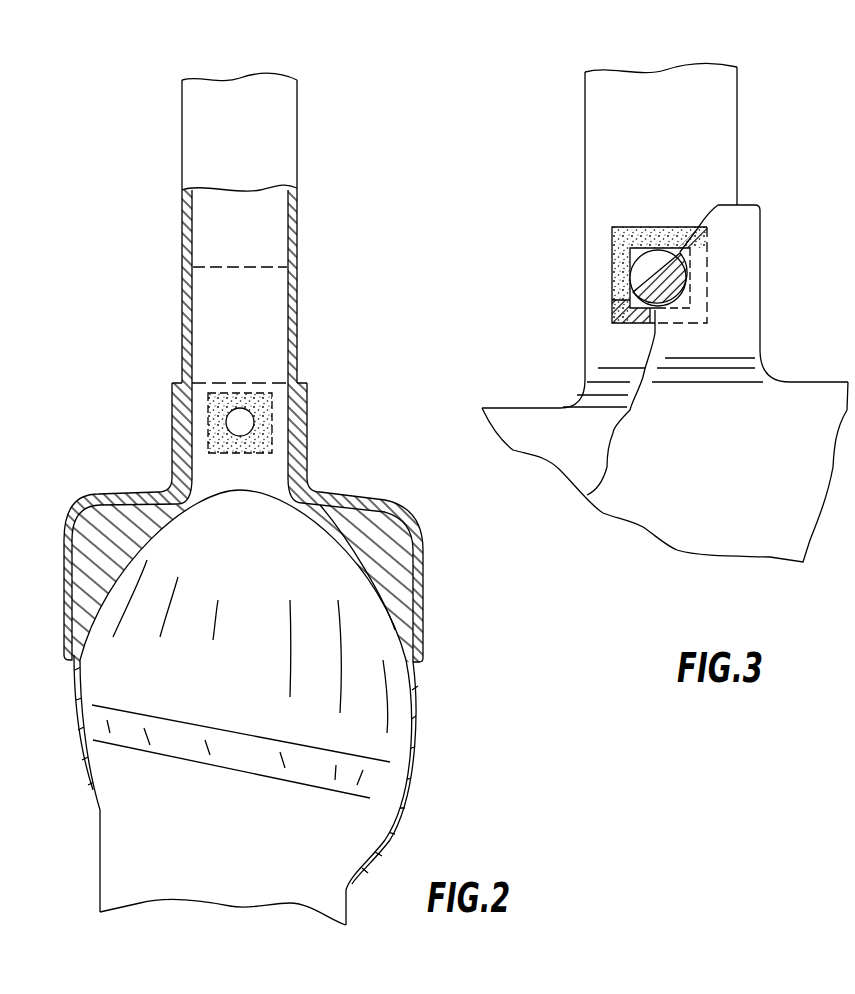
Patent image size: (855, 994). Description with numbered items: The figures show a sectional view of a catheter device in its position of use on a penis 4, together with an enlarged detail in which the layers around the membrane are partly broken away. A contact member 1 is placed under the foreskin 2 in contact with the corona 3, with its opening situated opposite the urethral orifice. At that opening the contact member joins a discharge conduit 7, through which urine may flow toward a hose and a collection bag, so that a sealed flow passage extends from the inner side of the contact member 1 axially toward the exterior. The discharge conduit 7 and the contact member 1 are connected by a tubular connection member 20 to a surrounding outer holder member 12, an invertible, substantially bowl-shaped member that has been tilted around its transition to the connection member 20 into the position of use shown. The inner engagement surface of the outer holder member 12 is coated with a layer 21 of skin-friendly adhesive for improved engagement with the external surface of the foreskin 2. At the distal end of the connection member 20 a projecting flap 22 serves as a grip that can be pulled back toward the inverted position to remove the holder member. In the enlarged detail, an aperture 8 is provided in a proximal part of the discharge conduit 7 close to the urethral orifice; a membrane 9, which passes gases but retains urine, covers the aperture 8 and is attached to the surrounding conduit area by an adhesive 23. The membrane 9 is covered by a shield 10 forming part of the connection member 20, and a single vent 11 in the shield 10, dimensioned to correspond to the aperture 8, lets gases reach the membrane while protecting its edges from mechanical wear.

In FIG. 2, the contact member 1 is at (104, 532).
In FIG. 2, the foreskin 2 is at (70, 678).
In FIG. 2, the corona 3 is at (256, 656).
In FIG. 2, the penis 4 is at (135, 860).
In FIG. 2, the discharge conduit 7 is at (300, 118).
In FIG. 3, the discharge conduit 7 is at (595, 103).
In FIG. 3, the aperture 8 is at (645, 260).
In FIG. 3, the membrane 9 is at (662, 250).
In FIG. 3, the shield 10 is at (725, 272).
In FIG. 3, the vent 11 is at (680, 306).
In FIG. 2, the outer holder member 12 is at (393, 512).
In FIG. 2, the tubular connection member 20 is at (178, 432).
In FIG. 2, the layer of skin-friendly adhesive 21 is at (66, 633).
In FIG. 2, the projecting flap 22 is at (262, 267).
In FIG. 3, the adhesive 23 is at (622, 257).